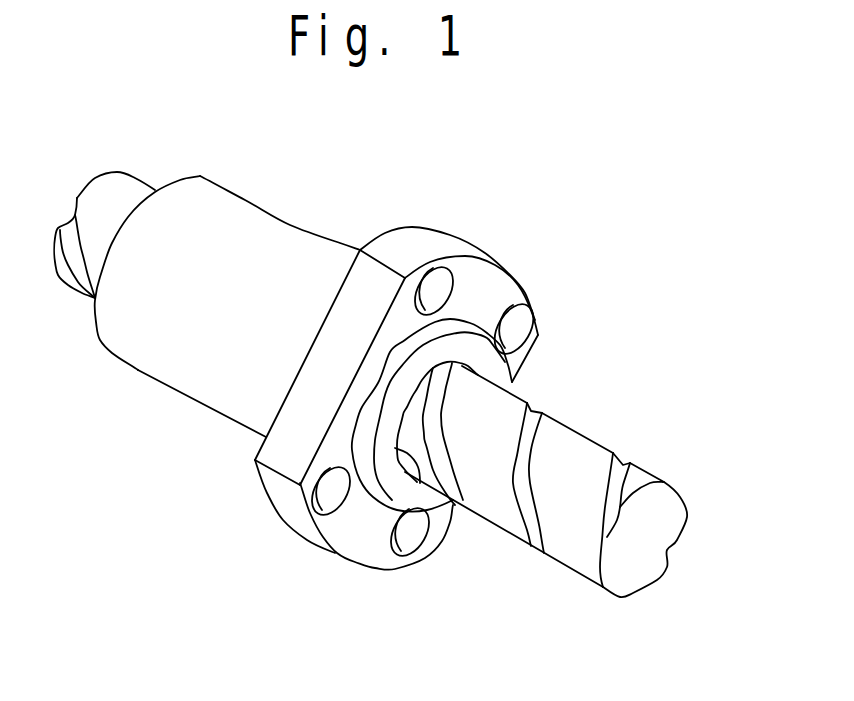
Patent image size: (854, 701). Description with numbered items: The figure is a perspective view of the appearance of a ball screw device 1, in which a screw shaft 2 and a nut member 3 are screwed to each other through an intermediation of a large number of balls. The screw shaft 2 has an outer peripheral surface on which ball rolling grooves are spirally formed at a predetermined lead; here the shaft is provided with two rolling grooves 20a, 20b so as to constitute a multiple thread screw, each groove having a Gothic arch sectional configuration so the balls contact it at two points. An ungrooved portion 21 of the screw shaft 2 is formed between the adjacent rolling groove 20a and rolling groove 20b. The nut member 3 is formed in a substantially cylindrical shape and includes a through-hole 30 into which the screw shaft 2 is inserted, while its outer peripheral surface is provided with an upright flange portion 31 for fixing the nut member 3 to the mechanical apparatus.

The ball screw device 1 is at (552, 264).
The screw shaft 2 is at (553, 466).
The nut member 3 is at (298, 224).
The rolling groove 20a is at (535, 408).
The rolling groove 20b is at (596, 433).
The ungrooved portion 21 is at (494, 503).
The through-hole 30 is at (417, 473).
The flange portion 31 is at (428, 240).